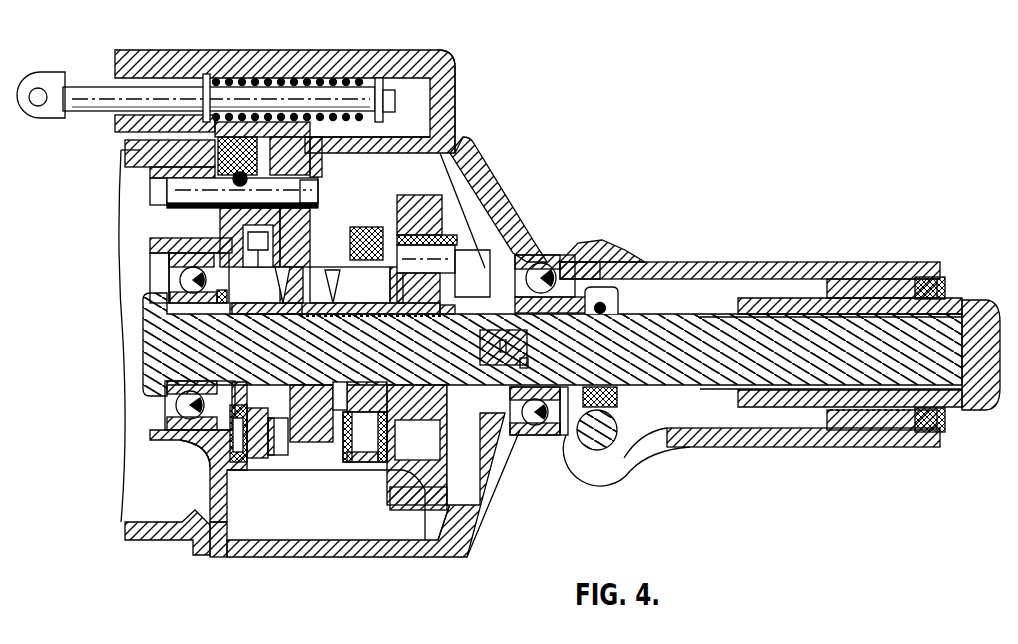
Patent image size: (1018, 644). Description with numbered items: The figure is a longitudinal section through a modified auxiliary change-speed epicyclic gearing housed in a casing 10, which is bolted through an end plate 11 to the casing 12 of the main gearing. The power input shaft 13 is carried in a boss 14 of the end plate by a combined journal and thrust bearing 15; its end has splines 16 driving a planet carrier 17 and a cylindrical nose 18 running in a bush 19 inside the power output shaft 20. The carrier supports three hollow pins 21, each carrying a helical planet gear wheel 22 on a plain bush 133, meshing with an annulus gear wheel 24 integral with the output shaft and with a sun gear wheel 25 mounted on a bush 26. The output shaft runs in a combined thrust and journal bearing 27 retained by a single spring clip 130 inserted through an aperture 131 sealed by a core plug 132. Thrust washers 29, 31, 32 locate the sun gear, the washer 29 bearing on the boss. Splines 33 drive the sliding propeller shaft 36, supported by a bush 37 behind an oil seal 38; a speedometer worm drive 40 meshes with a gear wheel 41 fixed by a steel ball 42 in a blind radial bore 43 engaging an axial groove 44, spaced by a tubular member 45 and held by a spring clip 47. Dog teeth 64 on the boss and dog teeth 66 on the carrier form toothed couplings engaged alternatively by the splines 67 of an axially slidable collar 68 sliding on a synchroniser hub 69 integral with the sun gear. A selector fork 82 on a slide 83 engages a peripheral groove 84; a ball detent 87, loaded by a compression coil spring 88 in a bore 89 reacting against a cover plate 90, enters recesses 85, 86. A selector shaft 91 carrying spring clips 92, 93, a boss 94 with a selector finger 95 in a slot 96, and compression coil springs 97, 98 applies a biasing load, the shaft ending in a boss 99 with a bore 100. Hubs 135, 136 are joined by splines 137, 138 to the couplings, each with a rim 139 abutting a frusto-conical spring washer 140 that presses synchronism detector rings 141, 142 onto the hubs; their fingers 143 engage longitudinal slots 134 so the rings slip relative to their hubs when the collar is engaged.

The casing 10 is at (370, 553).
The end plate 11 is at (218, 557).
The casing 12 is at (155, 542).
The power input shaft 13 is at (160, 341).
The boss 14 is at (152, 246).
The combined journal and thrust bearing 15 is at (180, 281).
The splines 16 is at (463, 445).
The planet carrier 17 is at (418, 497).
The cylindrical nose 18 is at (504, 348).
The bush 19 is at (525, 364).
The power output shaft 20 is at (712, 373).
The hollow pin 21 is at (455, 225).
The planet gear wheel 22 is at (487, 200).
The annulus gear wheel 24 is at (468, 142).
The sun gear wheel 25 is at (466, 355).
The bush 26 is at (403, 320).
The combined thrust and journal bearing 27 is at (535, 436).
The annular thrust washer 29 is at (347, 320).
The annular thrust washer 31 is at (471, 273).
The annular thrust washer 32 is at (488, 440).
The splines 33 is at (720, 318).
The propeller shaft 36 is at (976, 410).
The bush 37 is at (842, 294).
The oil seal 38 is at (928, 280).
The speedometer worm drive 40 is at (615, 432).
The gear wheel 41 is at (610, 272).
The steel ball 42 is at (610, 306).
The blind radial bore 43 is at (602, 314).
The axial groove 44 is at (640, 272).
The tubular member 45 is at (565, 436).
The spring clip 47 is at (618, 396).
The dog teeth 64 is at (275, 292).
The dog teeth 66 is at (356, 290).
The splines 67 is at (277, 458).
The axially slidable collar 68 is at (300, 445).
The synchroniser hub 69 is at (440, 322).
The selector fork 82 is at (324, 186).
The axially movable slide 83 is at (180, 206).
The peripheral groove 84 is at (297, 442).
The recess 85 is at (215, 184).
The recess 86 is at (335, 178).
The ball detent 87 is at (225, 203).
The compression coil spring 88 is at (125, 146).
The bore 89 is at (188, 167).
The cover plate 90 is at (290, 62).
The selector shaft 91 is at (92, 87).
The spring clip 92 is at (205, 75).
The spring clip 93 is at (405, 75).
The boss 94 is at (315, 79).
The selector finger 95 is at (350, 138).
The slot 96 is at (310, 158).
The compression coil spring 97 is at (245, 80).
The compression coil spring 98 is at (352, 82).
The boss 99 is at (50, 72).
The bore 100 is at (36, 106).
The spring clip 130 is at (605, 246).
The aperture 131 is at (553, 257).
The core plug 132 is at (534, 237).
The plain bush 133 is at (455, 245).
The longitudinal slot 134 is at (298, 314).
The hub 135 is at (210, 460).
The hub 136 is at (380, 465).
The splines 137 is at (250, 314).
The splines 138 is at (417, 445).
The rim 139 is at (213, 477).
The frusto-conical spring washer 140 is at (258, 462).
The synchronism detector ring 141 is at (220, 240).
The synchronism detector ring 142 is at (363, 228).
The finger 143 is at (310, 250).